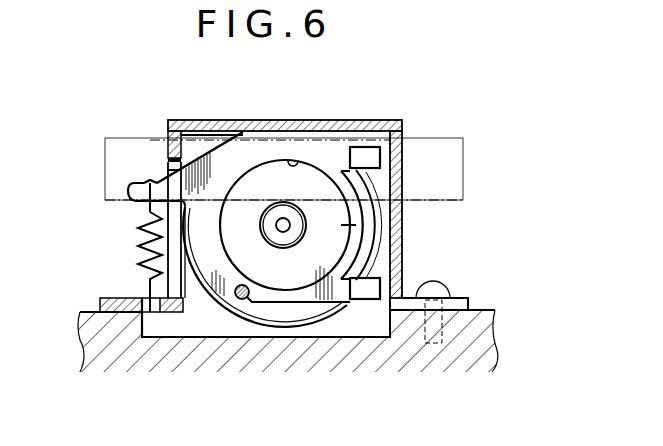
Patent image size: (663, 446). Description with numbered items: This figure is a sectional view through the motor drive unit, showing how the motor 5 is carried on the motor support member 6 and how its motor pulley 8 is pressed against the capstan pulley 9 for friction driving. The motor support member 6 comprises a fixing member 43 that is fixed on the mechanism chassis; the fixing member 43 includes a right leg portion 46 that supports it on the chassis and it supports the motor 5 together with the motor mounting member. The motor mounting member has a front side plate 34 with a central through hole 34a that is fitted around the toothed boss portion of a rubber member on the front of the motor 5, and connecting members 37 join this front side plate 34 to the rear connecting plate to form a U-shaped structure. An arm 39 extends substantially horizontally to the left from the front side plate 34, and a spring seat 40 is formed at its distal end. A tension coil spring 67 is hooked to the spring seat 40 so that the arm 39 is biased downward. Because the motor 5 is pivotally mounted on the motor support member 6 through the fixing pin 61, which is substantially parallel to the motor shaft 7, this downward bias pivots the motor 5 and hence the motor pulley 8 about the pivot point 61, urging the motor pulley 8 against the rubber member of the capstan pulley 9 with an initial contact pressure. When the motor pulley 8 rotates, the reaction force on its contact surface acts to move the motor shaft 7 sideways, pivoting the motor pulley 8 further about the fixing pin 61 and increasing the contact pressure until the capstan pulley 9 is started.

The motor support member 6 is at (176, 114).
The motor 5 is at (333, 320).
The motor shaft 7 is at (280, 226).
The motor pulley 8 is at (290, 233).
The capstan pulley 9 is at (452, 178).
The front side plate 34 is at (218, 152).
The through hole 34a is at (292, 160).
The connecting members 37 is at (380, 157).
The arm 39 is at (160, 178).
The spring seat 40 is at (148, 186).
The fixing member 43 is at (374, 120).
The right leg portion 46 is at (395, 242).
The fixing pin 61 is at (247, 303).
The tension coil spring 67 is at (143, 240).